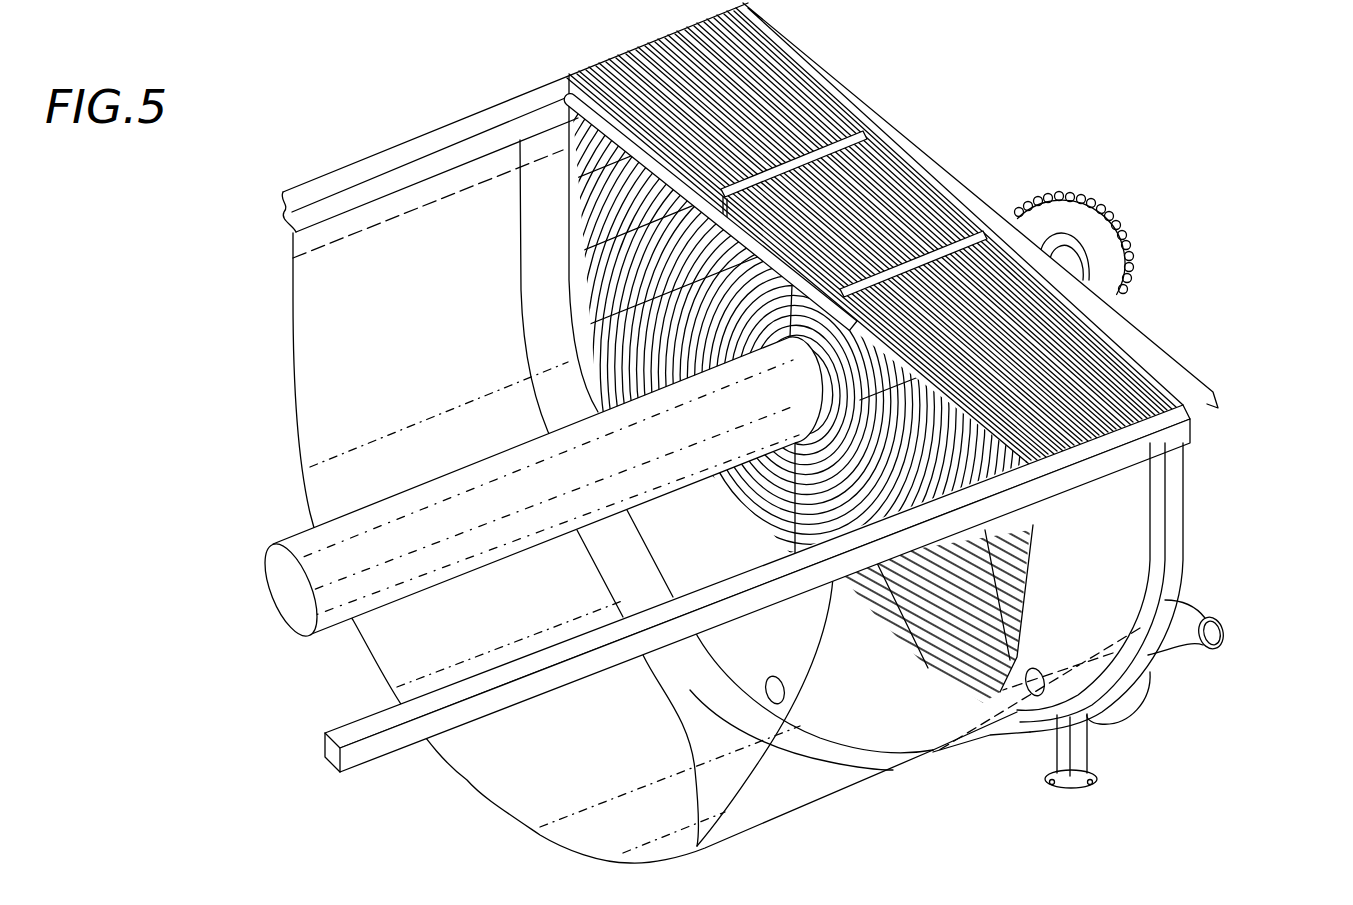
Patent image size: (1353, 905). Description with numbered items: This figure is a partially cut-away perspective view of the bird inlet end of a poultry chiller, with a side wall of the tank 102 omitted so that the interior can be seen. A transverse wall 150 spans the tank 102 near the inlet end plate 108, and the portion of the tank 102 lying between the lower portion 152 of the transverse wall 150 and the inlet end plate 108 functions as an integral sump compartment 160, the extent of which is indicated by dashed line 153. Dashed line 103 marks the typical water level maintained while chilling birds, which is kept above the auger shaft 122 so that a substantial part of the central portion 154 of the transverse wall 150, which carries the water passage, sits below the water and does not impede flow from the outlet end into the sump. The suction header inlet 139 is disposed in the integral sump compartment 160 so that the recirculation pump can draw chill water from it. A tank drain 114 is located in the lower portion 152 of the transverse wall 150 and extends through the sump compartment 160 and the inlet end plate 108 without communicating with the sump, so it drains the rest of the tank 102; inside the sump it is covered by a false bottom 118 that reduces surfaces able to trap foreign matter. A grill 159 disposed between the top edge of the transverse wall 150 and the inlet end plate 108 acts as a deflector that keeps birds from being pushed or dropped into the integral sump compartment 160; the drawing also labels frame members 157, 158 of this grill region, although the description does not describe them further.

The tank 102 is at (458, 653).
The dashed line indicating water level 103 is at (415, 215).
The inlet end plate 108 is at (1118, 521).
The tank drain 114 is at (758, 708).
The false bottom 118 is at (1010, 703).
The auger shaft 122 is at (640, 466).
The suction header inlet 139 is at (1100, 735).
The transverse wall 150 is at (540, 345).
The lower portion of the transverse wall 152 is at (912, 708).
The dashed line indicating sump compartment 153 is at (888, 645).
The central portion of the transverse wall 154 is at (640, 299).
The support bar 157 is at (878, 310).
The frame rail 158 is at (572, 128).
The grill 159 is at (600, 62).
The integral sump compartment 160 is at (1105, 673).